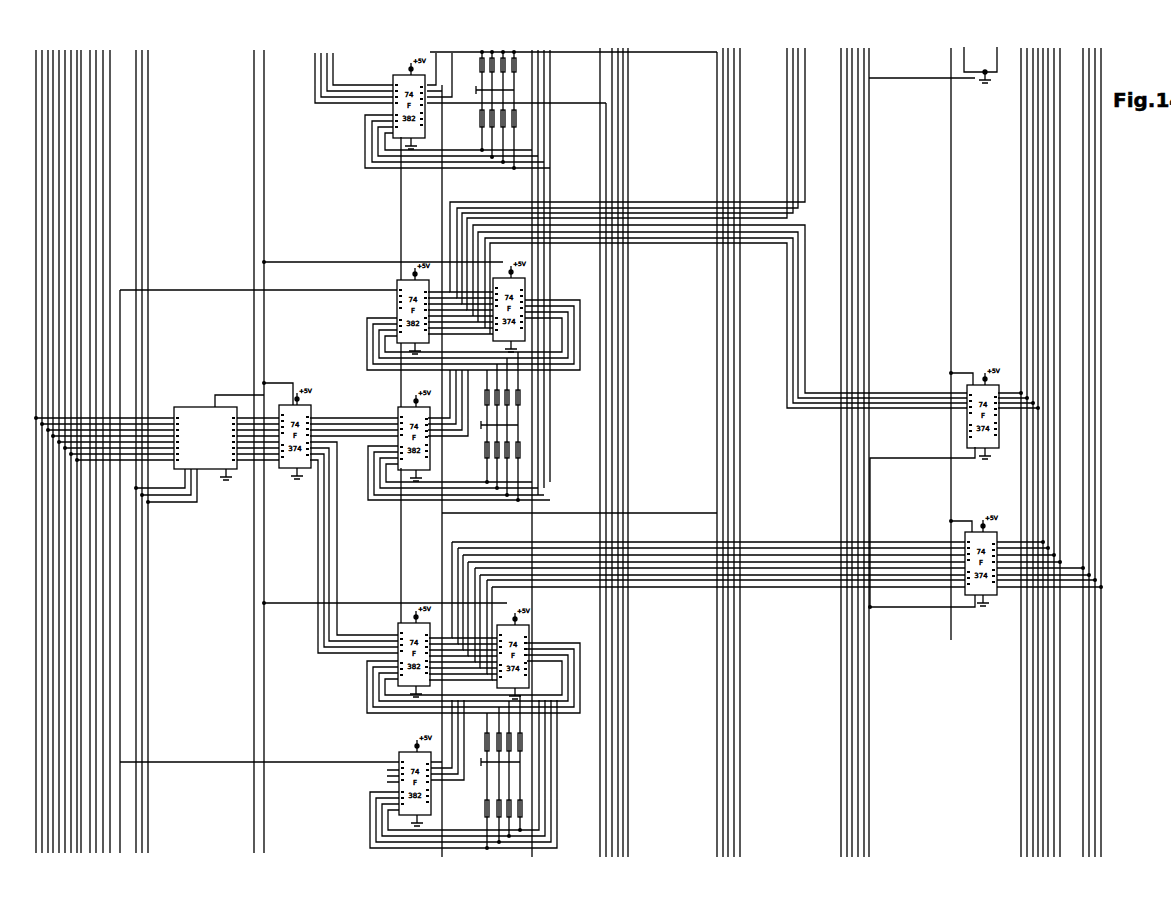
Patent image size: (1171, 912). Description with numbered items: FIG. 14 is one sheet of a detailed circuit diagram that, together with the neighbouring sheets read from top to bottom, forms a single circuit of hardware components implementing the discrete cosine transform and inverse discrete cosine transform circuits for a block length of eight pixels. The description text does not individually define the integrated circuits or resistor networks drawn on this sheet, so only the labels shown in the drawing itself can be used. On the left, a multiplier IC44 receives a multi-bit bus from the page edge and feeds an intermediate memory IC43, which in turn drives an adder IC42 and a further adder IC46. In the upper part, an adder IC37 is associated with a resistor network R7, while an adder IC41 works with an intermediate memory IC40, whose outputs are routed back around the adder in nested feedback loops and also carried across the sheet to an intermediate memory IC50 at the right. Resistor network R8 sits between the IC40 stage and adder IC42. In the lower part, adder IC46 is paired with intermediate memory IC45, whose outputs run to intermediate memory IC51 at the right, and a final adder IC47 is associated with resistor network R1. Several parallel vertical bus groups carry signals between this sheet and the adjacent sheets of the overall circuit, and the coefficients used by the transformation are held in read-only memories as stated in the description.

The adder IC37 is at (398, 32).
The adder IC41 is at (403, 279).
The intermediate memory IC40 is at (642, 258).
The multiplier IC44 is at (214, 365).
The intermediate memory IC43 is at (305, 362).
The adder IC42 is at (405, 406).
The adder IC46 is at (398, 658).
The intermediate memory IC45 is at (645, 610).
The adder IC47 is at (401, 751).
The intermediate memory IC50 is at (940, 367).
The intermediate memory IC51 is at (940, 514).
The resistor network R7 is at (496, 110).
The resistor network R8 is at (500, 426).
The resistor network R1 is at (501, 771).